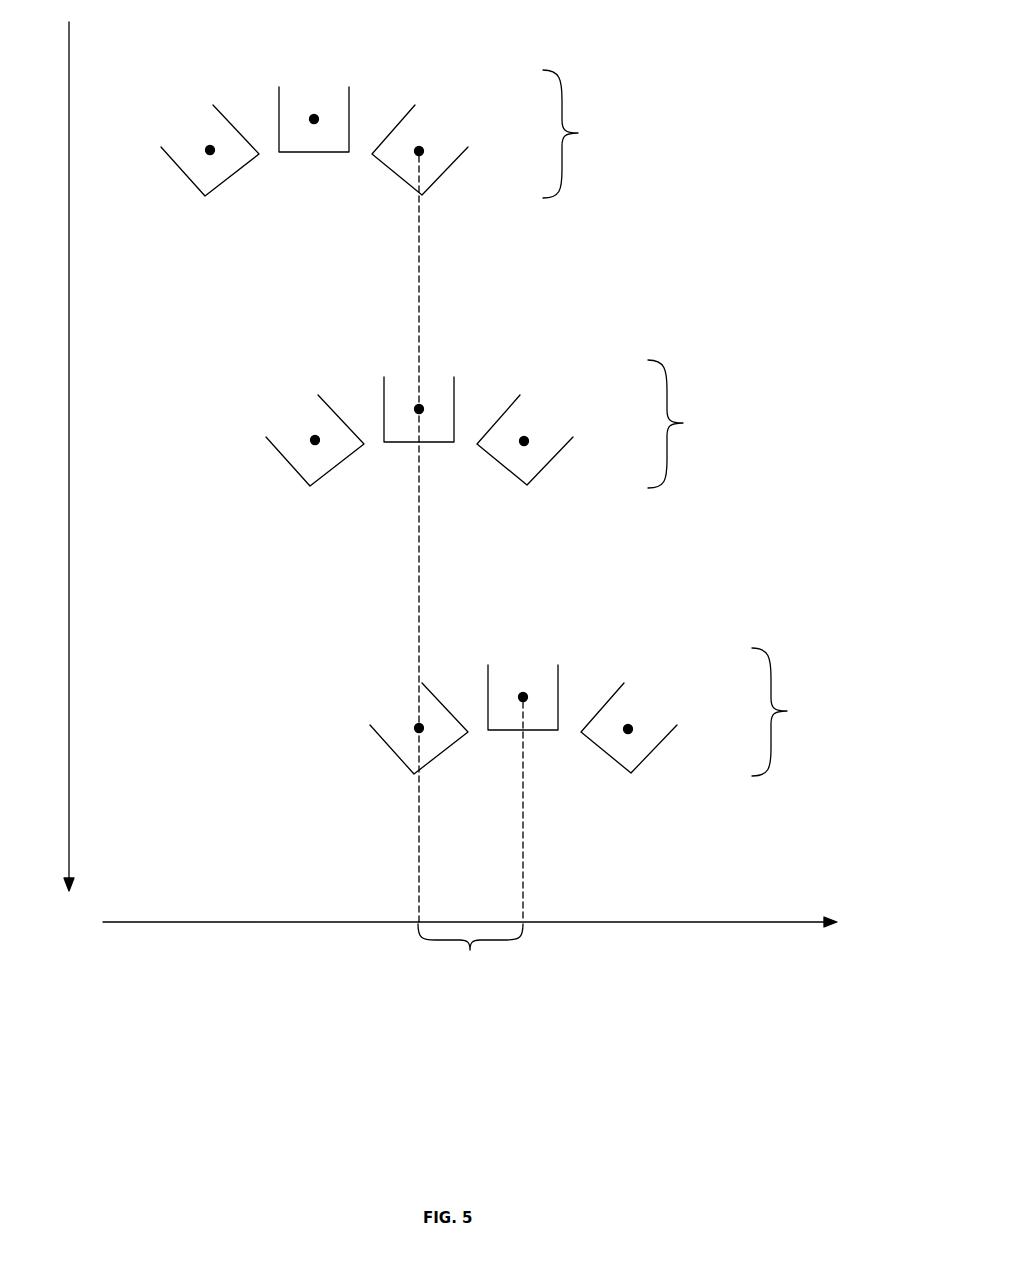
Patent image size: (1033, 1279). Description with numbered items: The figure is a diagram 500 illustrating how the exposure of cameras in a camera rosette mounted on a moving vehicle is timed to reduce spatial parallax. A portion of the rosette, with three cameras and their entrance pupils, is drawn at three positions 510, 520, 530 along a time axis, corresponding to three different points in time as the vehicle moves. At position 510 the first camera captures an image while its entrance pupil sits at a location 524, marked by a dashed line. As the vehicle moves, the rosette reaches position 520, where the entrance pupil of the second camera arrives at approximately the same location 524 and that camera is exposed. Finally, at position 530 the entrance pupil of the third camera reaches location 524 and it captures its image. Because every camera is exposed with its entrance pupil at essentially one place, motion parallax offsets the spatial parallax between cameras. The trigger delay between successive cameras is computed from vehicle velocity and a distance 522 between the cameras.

The diagram 500 is at (853, 12).
The position 510 is at (580, 134).
The position 520 is at (685, 424).
The distance 522 is at (470, 952).
The location 524 is at (418, 922).
The position 530 is at (789, 712).